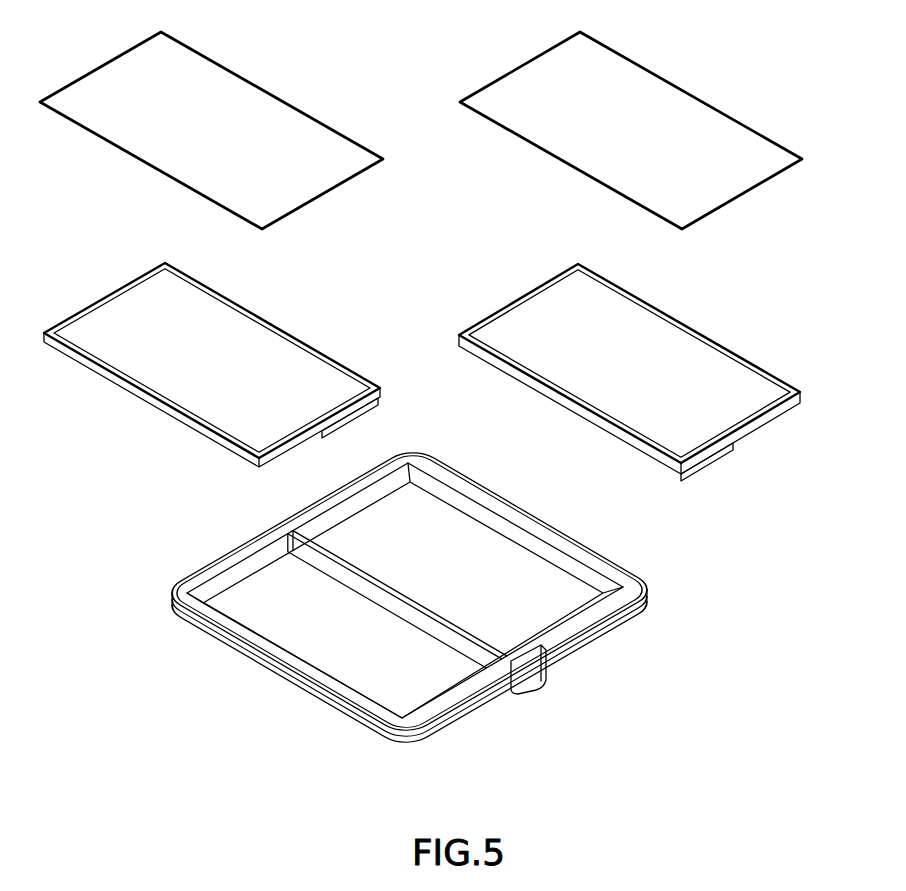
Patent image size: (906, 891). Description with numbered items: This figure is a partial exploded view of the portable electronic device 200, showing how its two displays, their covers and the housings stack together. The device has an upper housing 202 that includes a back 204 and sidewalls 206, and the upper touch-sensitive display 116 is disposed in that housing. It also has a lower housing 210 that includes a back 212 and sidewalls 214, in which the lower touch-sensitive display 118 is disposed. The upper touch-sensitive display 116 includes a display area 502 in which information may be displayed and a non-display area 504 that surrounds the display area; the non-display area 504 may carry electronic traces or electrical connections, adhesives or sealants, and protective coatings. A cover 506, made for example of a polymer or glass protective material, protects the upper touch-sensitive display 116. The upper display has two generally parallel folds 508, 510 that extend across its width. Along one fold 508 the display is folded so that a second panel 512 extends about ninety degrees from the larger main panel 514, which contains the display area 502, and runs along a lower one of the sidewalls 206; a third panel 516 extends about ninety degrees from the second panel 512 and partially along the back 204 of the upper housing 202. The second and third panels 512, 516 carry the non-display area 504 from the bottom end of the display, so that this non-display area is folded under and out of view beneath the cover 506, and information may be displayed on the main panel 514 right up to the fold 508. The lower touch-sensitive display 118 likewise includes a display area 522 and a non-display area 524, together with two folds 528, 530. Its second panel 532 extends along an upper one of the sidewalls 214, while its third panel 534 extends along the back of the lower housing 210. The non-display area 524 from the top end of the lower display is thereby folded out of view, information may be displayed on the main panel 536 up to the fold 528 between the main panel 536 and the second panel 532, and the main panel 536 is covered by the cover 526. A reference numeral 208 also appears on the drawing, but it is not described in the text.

The portable electronic device 200 is at (663, 751).
The upper housing 202 is at (414, 606).
The back 204 is at (452, 530).
The sidewalls 206 is at (424, 594).
The cover sheet 208 is at (683, 132).
The lower housing 210 is at (433, 732).
The back 212 is at (235, 597).
The sidewalls 214 is at (477, 644).
The upper touch-sensitive display 116 is at (550, 298).
The lower touch-sensitive display 118 is at (146, 300).
The display area 502 is at (637, 390).
The non-display area 504 is at (758, 422).
The cover 506 is at (533, 92).
The fold 508 is at (688, 467).
The fold 510 is at (641, 452).
The second panel 512 is at (665, 463).
The main panel 514 is at (645, 318).
The third panel 516 is at (726, 447).
The display area 522 is at (118, 305).
The non-display area 524 is at (82, 312).
The cover 526 is at (130, 52).
The fold 528 is at (244, 330).
The fold 530 is at (378, 401).
The second panel 532 is at (383, 397).
The third panel 534 is at (340, 421).
The main panel 536 is at (187, 397).